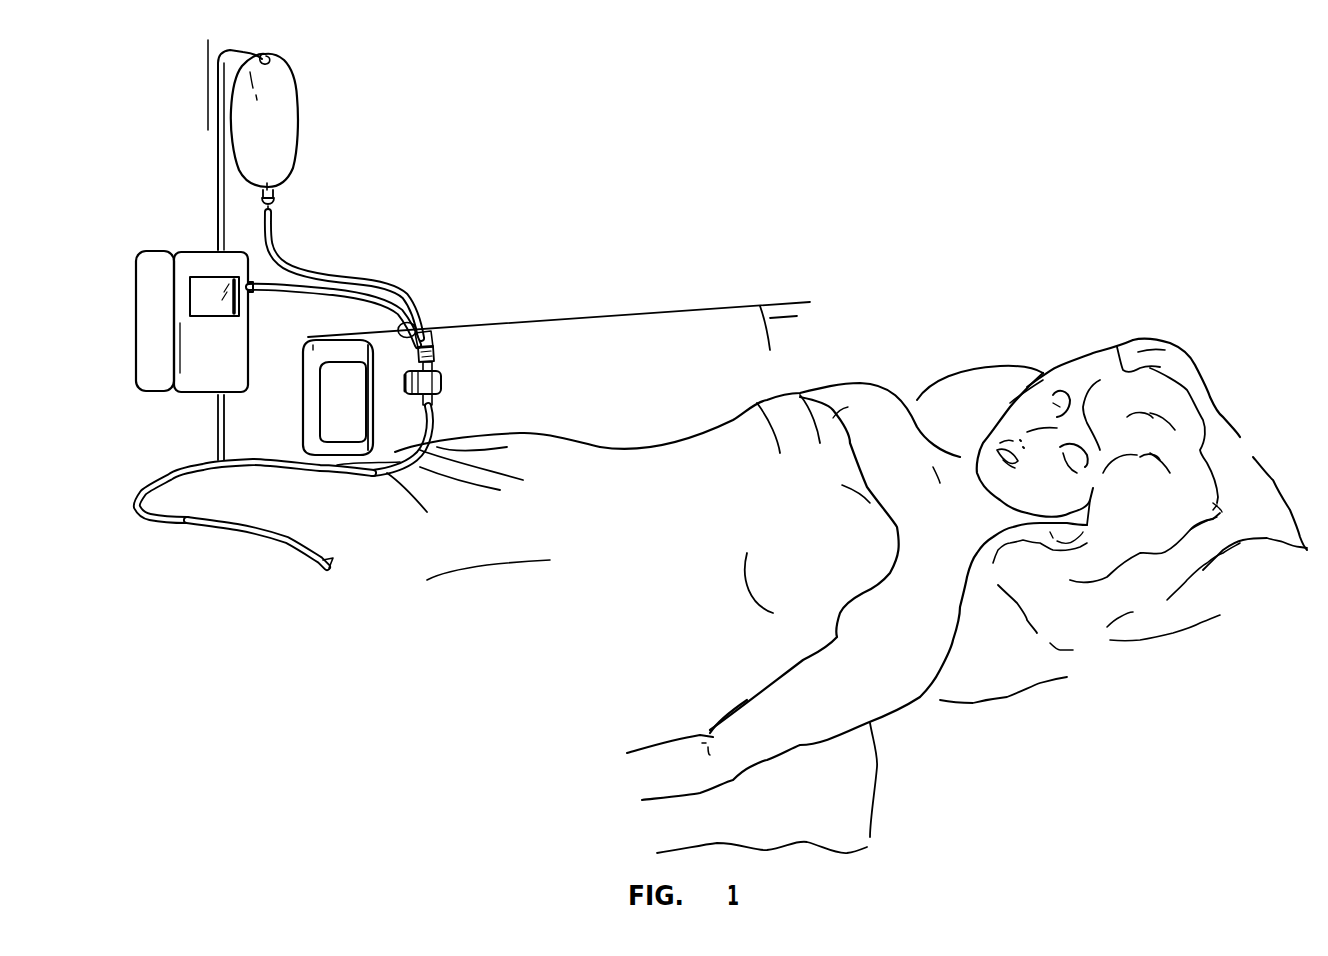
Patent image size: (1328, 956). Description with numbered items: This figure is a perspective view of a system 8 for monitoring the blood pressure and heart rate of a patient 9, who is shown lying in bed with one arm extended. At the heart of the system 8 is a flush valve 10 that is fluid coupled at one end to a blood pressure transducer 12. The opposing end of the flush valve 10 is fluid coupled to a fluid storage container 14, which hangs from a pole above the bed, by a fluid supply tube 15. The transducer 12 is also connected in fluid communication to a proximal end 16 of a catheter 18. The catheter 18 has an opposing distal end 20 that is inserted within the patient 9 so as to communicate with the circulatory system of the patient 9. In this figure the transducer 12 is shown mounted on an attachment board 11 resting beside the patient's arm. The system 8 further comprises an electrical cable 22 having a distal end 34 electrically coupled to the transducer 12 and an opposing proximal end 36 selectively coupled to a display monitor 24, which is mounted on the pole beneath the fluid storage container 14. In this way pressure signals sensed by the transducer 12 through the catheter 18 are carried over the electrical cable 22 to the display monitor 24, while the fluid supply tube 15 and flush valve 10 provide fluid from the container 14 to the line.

The system 8 is at (547, 347).
The patient 9 is at (921, 703).
The flush valve 10 is at (440, 362).
The attachment board 11 is at (640, 348).
The blood pressure transducer 12 is at (447, 384).
The fluid storage container 14 is at (282, 130).
The fluid supply tube 15 is at (288, 251).
The proximal end 16 is at (438, 419).
The catheter 18 is at (163, 518).
The distal end 20 is at (328, 548).
The electrical cable 22 is at (360, 297).
The display monitor 24 is at (152, 320).
The distal end 34 is at (420, 333).
The proximal end 36 is at (253, 289).